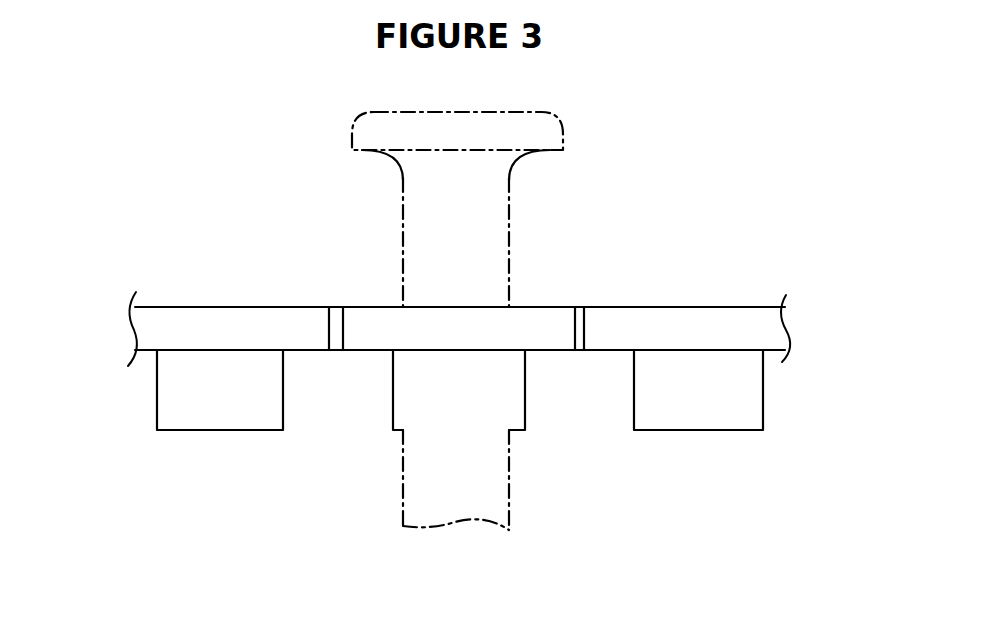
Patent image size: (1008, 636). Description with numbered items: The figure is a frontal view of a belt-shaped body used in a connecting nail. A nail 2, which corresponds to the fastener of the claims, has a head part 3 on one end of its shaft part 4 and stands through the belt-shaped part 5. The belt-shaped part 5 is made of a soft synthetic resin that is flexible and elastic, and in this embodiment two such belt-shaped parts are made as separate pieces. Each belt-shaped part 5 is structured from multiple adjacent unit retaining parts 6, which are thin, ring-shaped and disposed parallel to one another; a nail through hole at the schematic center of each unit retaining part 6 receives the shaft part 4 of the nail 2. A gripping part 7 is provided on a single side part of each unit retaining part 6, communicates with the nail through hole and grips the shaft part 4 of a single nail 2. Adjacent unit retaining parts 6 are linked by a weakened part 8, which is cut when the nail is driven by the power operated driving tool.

The nail 2 is at (560, 169).
The head part 3 is at (357, 144).
The shaft part 4 is at (470, 240).
The belt-shaped part 5 is at (202, 300).
The unit retaining part 6 is at (365, 325).
The gripping part 7 is at (257, 410).
The weakened part 8 is at (334, 350).